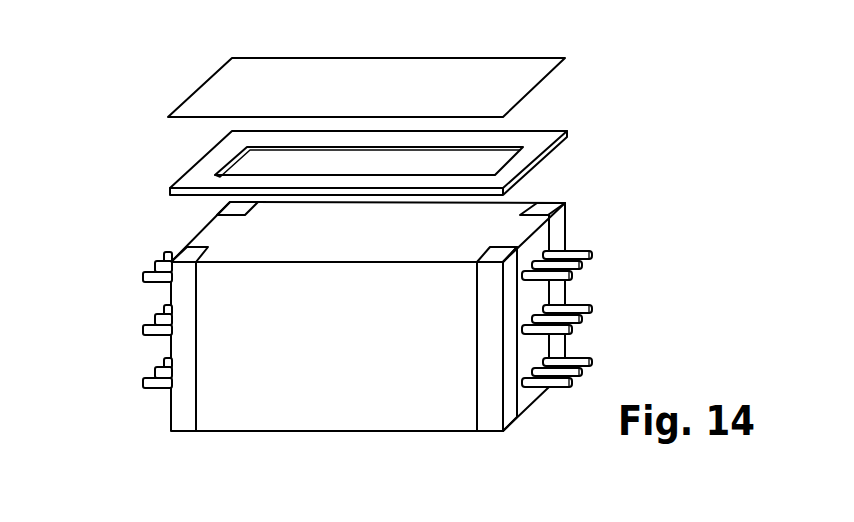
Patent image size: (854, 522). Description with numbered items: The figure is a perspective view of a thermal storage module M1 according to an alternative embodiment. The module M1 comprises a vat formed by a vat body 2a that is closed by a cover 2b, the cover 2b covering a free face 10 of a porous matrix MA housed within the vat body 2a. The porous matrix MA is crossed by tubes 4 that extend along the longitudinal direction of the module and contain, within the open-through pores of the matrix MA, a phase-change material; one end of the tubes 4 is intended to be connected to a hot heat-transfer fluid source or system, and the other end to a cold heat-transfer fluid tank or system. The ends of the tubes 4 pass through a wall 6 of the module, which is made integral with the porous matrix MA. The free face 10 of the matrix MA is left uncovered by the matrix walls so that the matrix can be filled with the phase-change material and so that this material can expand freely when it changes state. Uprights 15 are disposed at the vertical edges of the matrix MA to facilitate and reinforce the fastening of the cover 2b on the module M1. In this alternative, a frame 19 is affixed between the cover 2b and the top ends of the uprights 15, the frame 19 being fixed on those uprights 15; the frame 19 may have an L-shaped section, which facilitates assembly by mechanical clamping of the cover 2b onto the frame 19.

The cover 2b is at (223, 92).
The frame 19 is at (210, 163).
The free face of the porous matrix 10 is at (367, 225).
The porous matrix MA is at (337, 232).
The vat body 2a is at (357, 382).
The uprights 15 is at (562, 227).
The wall 6 is at (460, 410).
The tubes 4 is at (580, 358).
The thermal storage module M1 is at (590, 152).